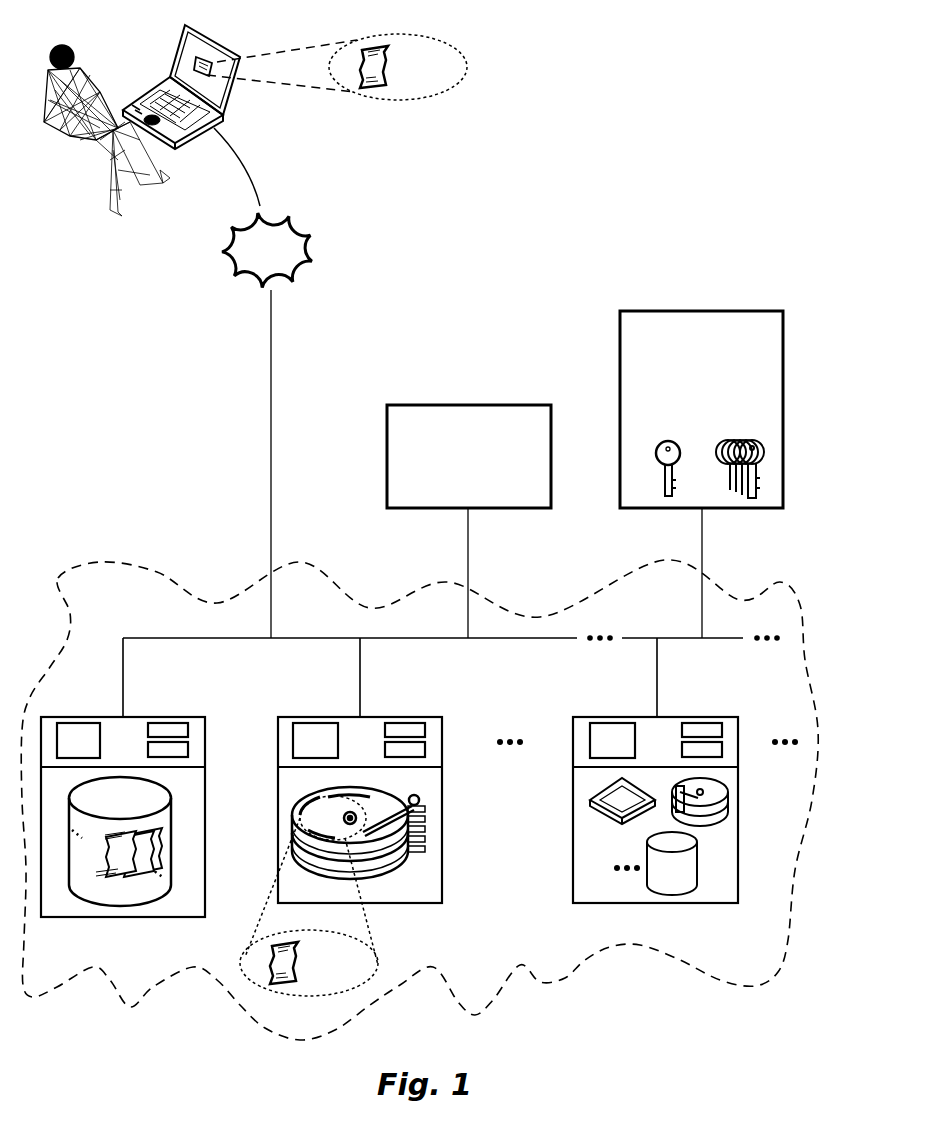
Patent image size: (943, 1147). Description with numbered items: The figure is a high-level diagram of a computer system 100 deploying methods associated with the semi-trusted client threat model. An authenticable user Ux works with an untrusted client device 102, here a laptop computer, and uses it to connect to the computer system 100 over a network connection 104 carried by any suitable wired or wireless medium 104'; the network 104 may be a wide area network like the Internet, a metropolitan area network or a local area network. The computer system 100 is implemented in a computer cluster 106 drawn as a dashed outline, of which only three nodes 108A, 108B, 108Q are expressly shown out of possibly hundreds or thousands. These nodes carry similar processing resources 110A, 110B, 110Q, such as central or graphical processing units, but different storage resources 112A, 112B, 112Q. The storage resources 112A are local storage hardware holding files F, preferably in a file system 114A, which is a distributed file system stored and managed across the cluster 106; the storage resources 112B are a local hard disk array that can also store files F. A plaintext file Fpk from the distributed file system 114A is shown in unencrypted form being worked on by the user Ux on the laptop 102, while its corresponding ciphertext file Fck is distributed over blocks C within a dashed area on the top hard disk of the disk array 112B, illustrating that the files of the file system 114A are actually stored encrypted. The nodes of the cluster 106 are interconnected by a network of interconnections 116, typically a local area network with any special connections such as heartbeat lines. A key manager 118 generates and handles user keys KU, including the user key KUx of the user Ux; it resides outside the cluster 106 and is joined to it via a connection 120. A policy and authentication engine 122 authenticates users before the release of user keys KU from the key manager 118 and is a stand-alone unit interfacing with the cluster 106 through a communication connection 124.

The computer system 100 is at (626, 133).
The client device 102 is at (192, 150).
The network connection 104 is at (267, 250).
The medium 104' is at (267, 167).
The computer cluster 106 is at (107, 562).
The node 108A is at (176, 723).
The node 108B is at (396, 723).
The node 108Q is at (676, 723).
The processing resources 110A is at (86, 723).
The processing resources 110B is at (313, 723).
The processing resources 110Q is at (600, 723).
The storage resources 112A is at (157, 817).
The storage resources 112B is at (374, 820).
The storage resources 112Q is at (617, 789).
The file system 114A is at (120, 868).
The interconnections 116 is at (145, 638).
The key manager 118 is at (701, 386).
The connection 120 is at (702, 556).
The policy and authentication engine 122 is at (468, 405).
The communication connection 124 is at (468, 545).
The authenticable user Ux is at (75, 50).
The plaintext file Fpk is at (388, 62).
The ciphertext file Fck is at (300, 960).
The files F is at (92, 873).
The blocks C is at (300, 790).
The user keys KU is at (738, 440).
The user key KUx is at (668, 440).